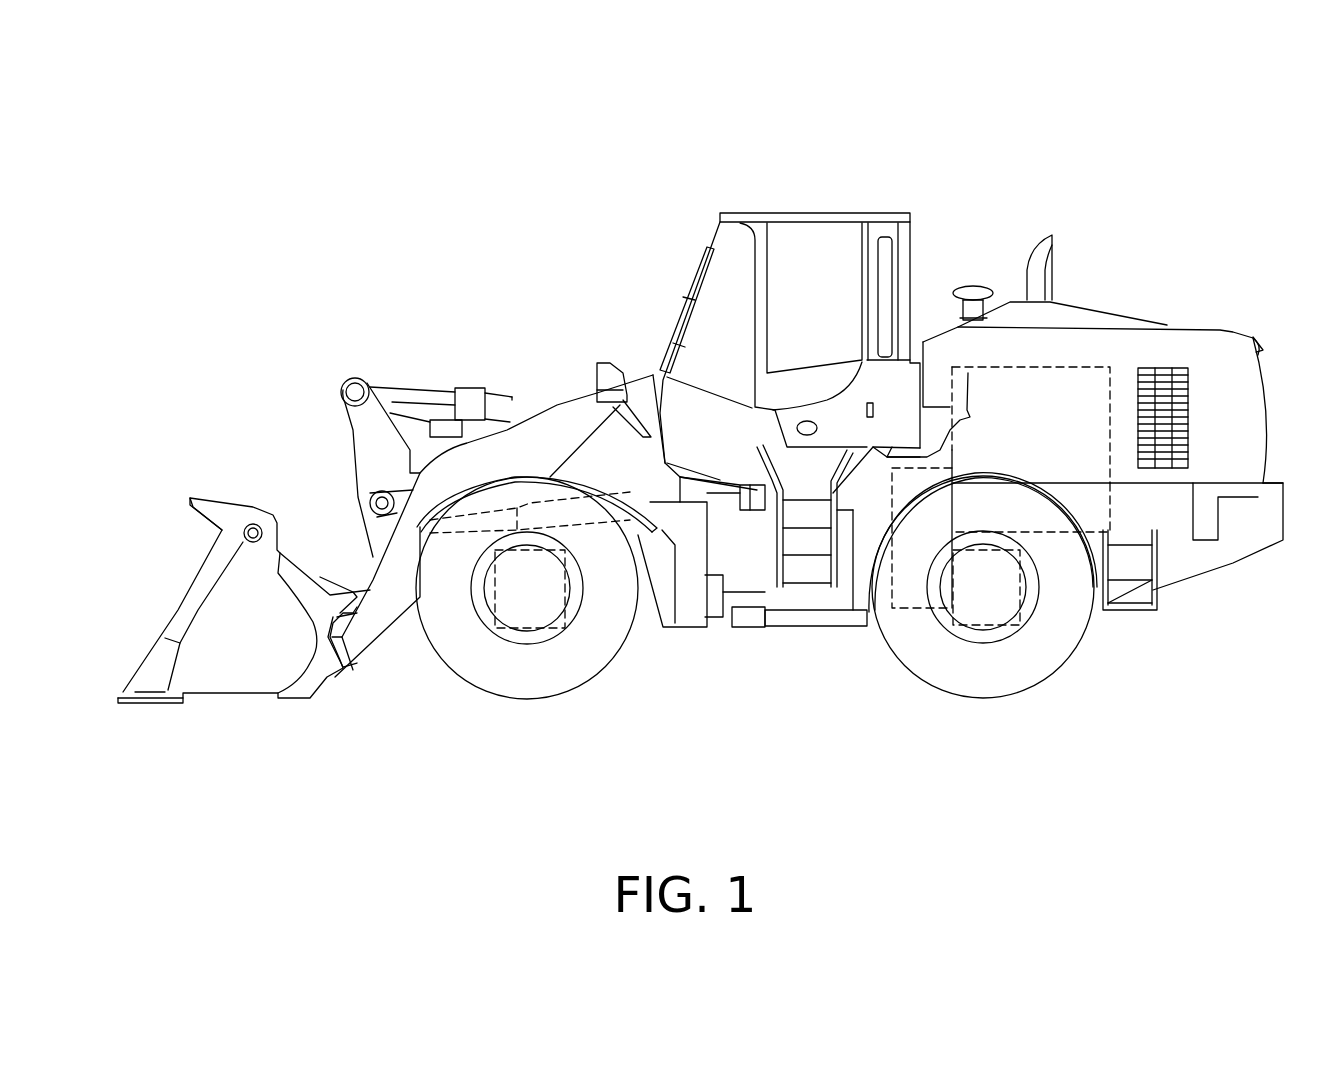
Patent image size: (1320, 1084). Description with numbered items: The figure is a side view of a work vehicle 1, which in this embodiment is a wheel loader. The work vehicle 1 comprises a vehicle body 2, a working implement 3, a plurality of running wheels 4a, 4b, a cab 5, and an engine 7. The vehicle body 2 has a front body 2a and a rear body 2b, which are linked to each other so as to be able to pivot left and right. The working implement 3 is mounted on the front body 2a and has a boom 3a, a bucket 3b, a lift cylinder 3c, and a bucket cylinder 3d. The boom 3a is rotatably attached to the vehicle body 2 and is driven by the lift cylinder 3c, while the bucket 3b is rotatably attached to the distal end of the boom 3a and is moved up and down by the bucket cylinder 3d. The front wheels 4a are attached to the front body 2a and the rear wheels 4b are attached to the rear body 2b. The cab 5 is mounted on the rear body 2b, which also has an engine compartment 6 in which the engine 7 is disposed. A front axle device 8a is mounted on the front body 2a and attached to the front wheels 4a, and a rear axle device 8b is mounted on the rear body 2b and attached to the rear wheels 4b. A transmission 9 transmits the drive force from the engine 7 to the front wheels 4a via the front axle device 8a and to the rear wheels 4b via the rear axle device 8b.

The work vehicle 1 is at (1217, 168).
The vehicle body 2 is at (1002, 257).
The front body 2a is at (690, 617).
The rear body 2b is at (813, 607).
The working implement 3 is at (258, 347).
The boom 3a is at (475, 460).
The bucket 3b is at (195, 493).
The lift cylinder 3c is at (527, 503).
The bucket cylinder 3d is at (410, 400).
The front wheels 4a is at (551, 677).
The rear wheels 4b is at (982, 675).
The cab 5 is at (797, 213).
The engine compartment 6 is at (1140, 330).
The engine 7 is at (1055, 355).
The front axle device 8a is at (477, 620).
The rear axle device 8b is at (1037, 612).
The transmission 9 is at (910, 610).